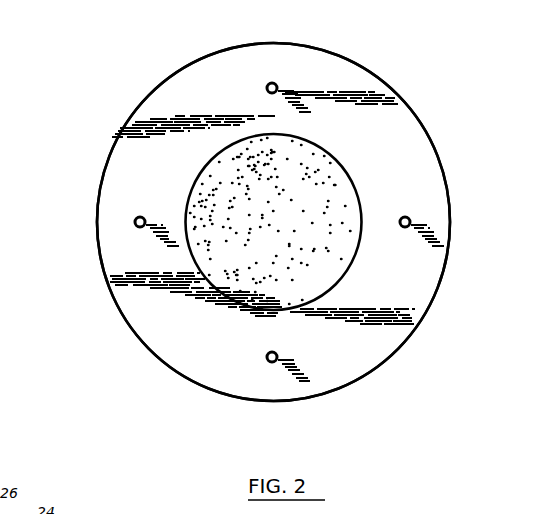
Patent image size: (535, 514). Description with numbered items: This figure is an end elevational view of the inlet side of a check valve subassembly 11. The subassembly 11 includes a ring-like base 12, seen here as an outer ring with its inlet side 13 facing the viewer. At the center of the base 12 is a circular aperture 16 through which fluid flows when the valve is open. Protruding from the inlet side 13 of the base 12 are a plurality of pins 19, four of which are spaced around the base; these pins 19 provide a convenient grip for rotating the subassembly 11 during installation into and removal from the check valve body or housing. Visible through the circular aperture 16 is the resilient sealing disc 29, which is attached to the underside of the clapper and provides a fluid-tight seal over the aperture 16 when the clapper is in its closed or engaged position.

The check valve subassembly 11 is at (116, 133).
The ring-like base 12 is at (360, 63).
The inlet side 13 is at (405, 275).
The circular aperture 16 is at (351, 172).
The pins 19 is at (270, 81).
The resilient sealing disc 29 is at (228, 263).